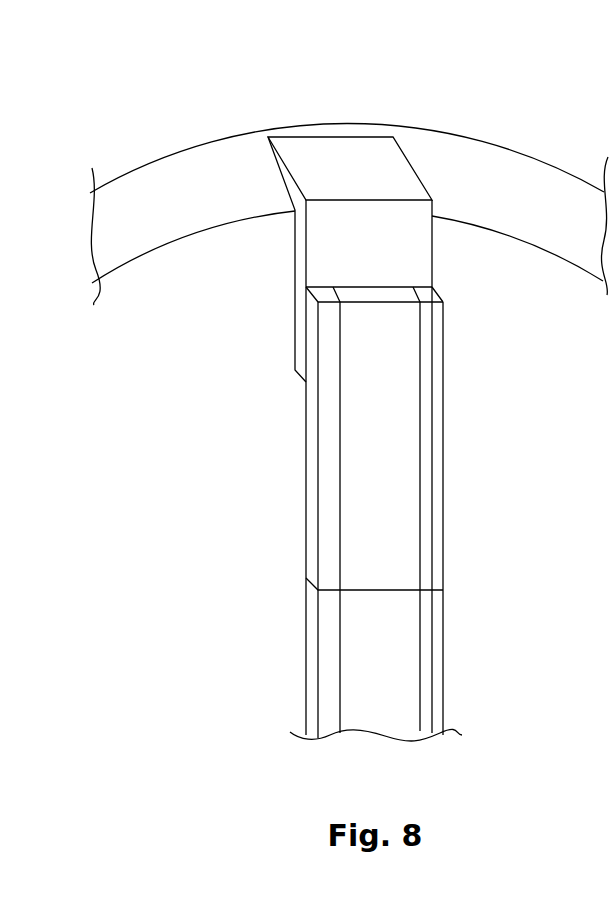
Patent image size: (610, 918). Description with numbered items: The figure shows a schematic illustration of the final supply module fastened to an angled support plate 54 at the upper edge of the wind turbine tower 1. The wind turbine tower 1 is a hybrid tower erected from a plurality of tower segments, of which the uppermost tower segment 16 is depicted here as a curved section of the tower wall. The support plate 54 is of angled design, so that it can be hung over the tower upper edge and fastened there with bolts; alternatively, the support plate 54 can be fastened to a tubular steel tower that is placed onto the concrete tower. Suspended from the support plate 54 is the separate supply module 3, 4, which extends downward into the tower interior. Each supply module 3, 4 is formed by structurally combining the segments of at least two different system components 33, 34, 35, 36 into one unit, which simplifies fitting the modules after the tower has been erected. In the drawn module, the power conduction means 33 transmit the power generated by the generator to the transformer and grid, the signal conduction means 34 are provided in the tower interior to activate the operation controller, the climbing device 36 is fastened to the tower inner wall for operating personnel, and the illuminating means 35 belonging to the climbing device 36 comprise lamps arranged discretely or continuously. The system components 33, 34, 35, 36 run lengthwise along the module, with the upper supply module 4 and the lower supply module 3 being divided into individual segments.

The wind turbine tower 1 is at (203, 140).
The support plate 54 is at (347, 153).
The tower segment 16 is at (533, 320).
The supply module 4 is at (310, 418).
The supply module 3 is at (310, 673).
The power conduction means 33 is at (323, 642).
The signal conduction means 34 is at (433, 387).
The illuminating means 35 is at (432, 620).
The climbing device 36 is at (387, 460).